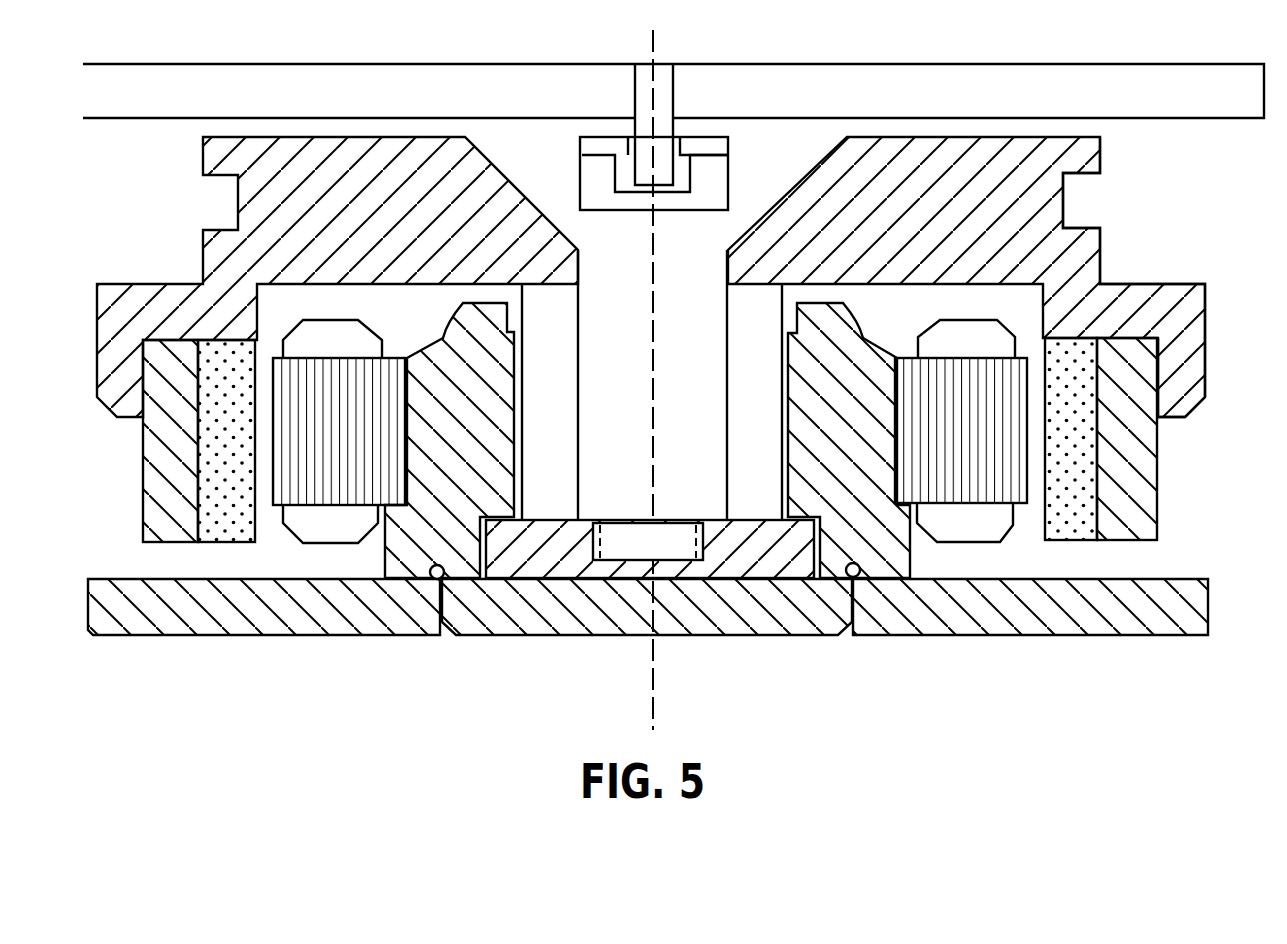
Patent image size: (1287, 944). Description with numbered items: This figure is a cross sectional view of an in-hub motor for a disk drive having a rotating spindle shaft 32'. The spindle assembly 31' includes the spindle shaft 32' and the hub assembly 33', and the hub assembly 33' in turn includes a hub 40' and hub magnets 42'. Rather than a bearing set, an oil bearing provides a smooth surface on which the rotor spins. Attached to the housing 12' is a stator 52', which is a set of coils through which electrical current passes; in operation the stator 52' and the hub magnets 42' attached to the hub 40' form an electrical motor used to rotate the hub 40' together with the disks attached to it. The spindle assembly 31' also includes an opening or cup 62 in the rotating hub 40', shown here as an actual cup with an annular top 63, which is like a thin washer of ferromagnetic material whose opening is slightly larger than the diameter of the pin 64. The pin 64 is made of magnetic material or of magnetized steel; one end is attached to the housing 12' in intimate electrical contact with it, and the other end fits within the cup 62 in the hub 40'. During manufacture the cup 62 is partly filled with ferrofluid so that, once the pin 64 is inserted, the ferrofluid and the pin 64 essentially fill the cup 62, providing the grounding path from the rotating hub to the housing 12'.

The housing 12' is at (675, 380).
The spindle assembly 31' is at (337, 277).
The spindle shaft 32' is at (628, 385).
The hub assembly 33' is at (1134, 277).
The hub 40' is at (966, 220).
The hub magnets 42' is at (704, 440).
The stator 52' is at (653, 446).
The cup 62 is at (680, 117).
The annular top 63 is at (695, 145).
The pin 64 is at (643, 108).